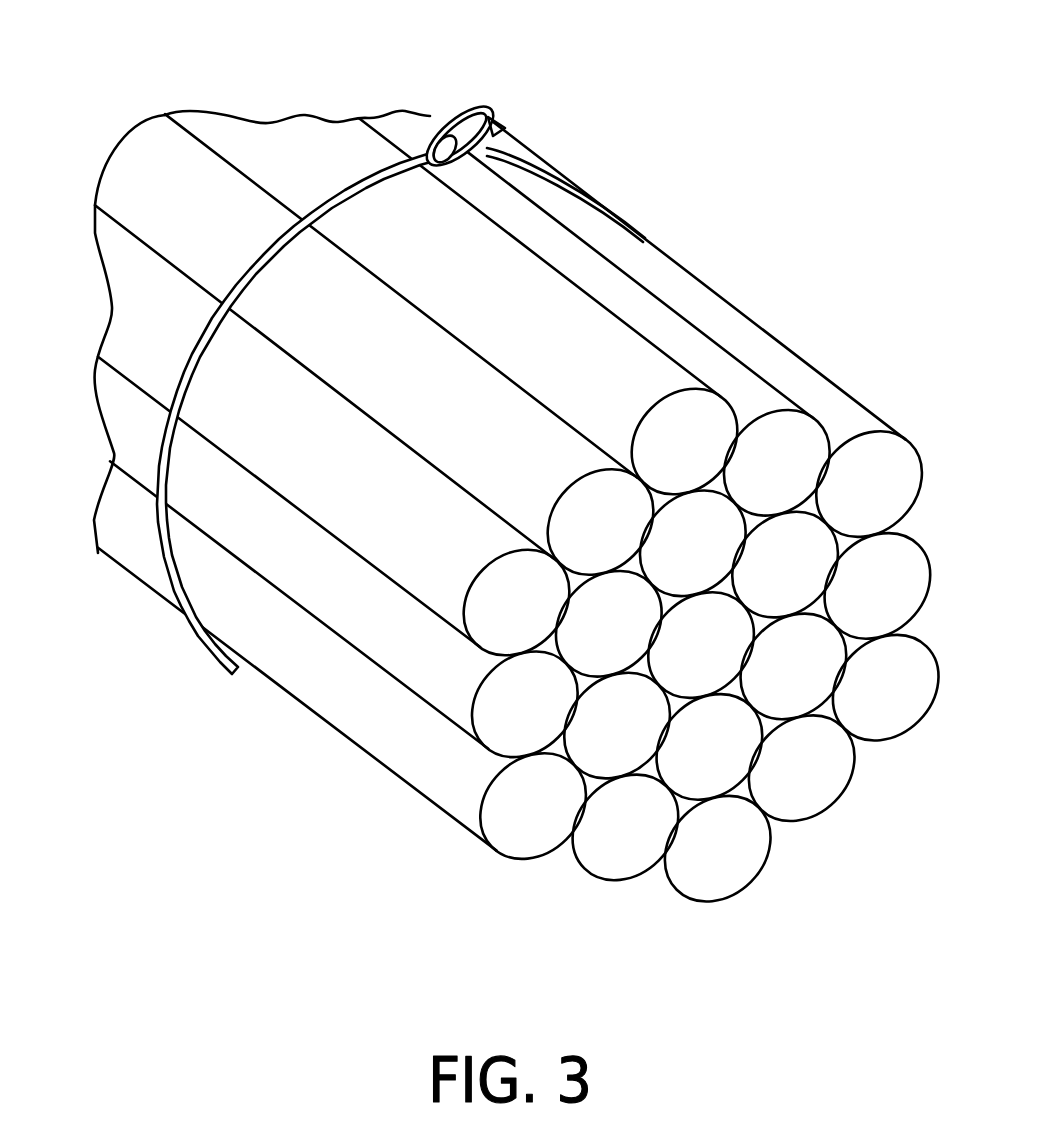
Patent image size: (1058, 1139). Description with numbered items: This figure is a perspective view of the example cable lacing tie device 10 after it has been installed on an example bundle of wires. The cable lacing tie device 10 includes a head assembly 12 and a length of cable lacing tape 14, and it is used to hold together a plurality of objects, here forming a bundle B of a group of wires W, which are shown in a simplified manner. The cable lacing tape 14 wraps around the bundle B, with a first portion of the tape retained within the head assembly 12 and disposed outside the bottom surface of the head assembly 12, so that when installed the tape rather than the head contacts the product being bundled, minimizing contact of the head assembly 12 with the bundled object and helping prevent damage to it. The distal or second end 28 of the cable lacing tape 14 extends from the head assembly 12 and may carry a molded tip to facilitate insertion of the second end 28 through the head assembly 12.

The cable lacing tie device 10 is at (401, 340).
The head assembly 12 is at (527, 151).
The cable lacing tape 14 is at (340, 207).
The second end of the cable lacing tape 28 is at (431, 98).
The bundle B is at (527, 544).
The wires W is at (622, 842).